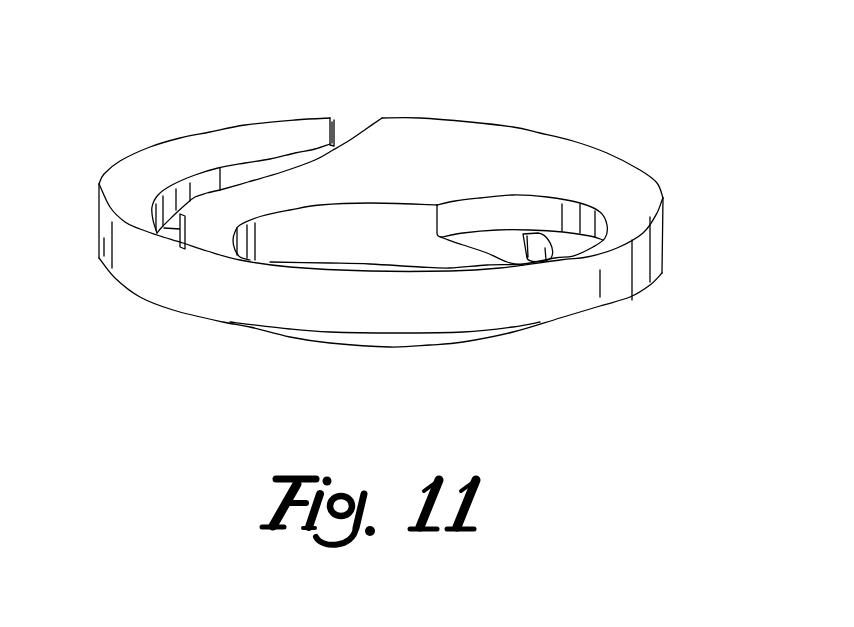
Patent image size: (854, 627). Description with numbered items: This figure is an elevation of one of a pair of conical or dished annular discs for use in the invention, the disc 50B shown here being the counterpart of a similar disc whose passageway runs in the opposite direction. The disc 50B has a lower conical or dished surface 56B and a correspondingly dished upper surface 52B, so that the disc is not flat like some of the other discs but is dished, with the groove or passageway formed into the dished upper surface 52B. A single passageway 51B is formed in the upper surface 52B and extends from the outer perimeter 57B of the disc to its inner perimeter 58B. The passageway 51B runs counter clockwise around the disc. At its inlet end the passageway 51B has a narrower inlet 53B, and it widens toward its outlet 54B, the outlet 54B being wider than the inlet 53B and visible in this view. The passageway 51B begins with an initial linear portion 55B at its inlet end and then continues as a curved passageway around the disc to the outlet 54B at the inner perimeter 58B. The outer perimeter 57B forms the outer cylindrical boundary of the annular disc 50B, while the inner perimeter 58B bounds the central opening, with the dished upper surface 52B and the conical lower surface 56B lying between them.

The conical or dished annular disc 50B is at (492, 124).
The passageway 51B is at (155, 230).
The dished upper surface 52B is at (477, 163).
The inlet 53B is at (347, 130).
The outlet 54B is at (488, 237).
The initial linear portion 55B is at (281, 157).
The lower conical or dished surface 56B is at (389, 348).
The outer perimeter 57B is at (567, 300).
The inner perimeter 58B is at (281, 244).